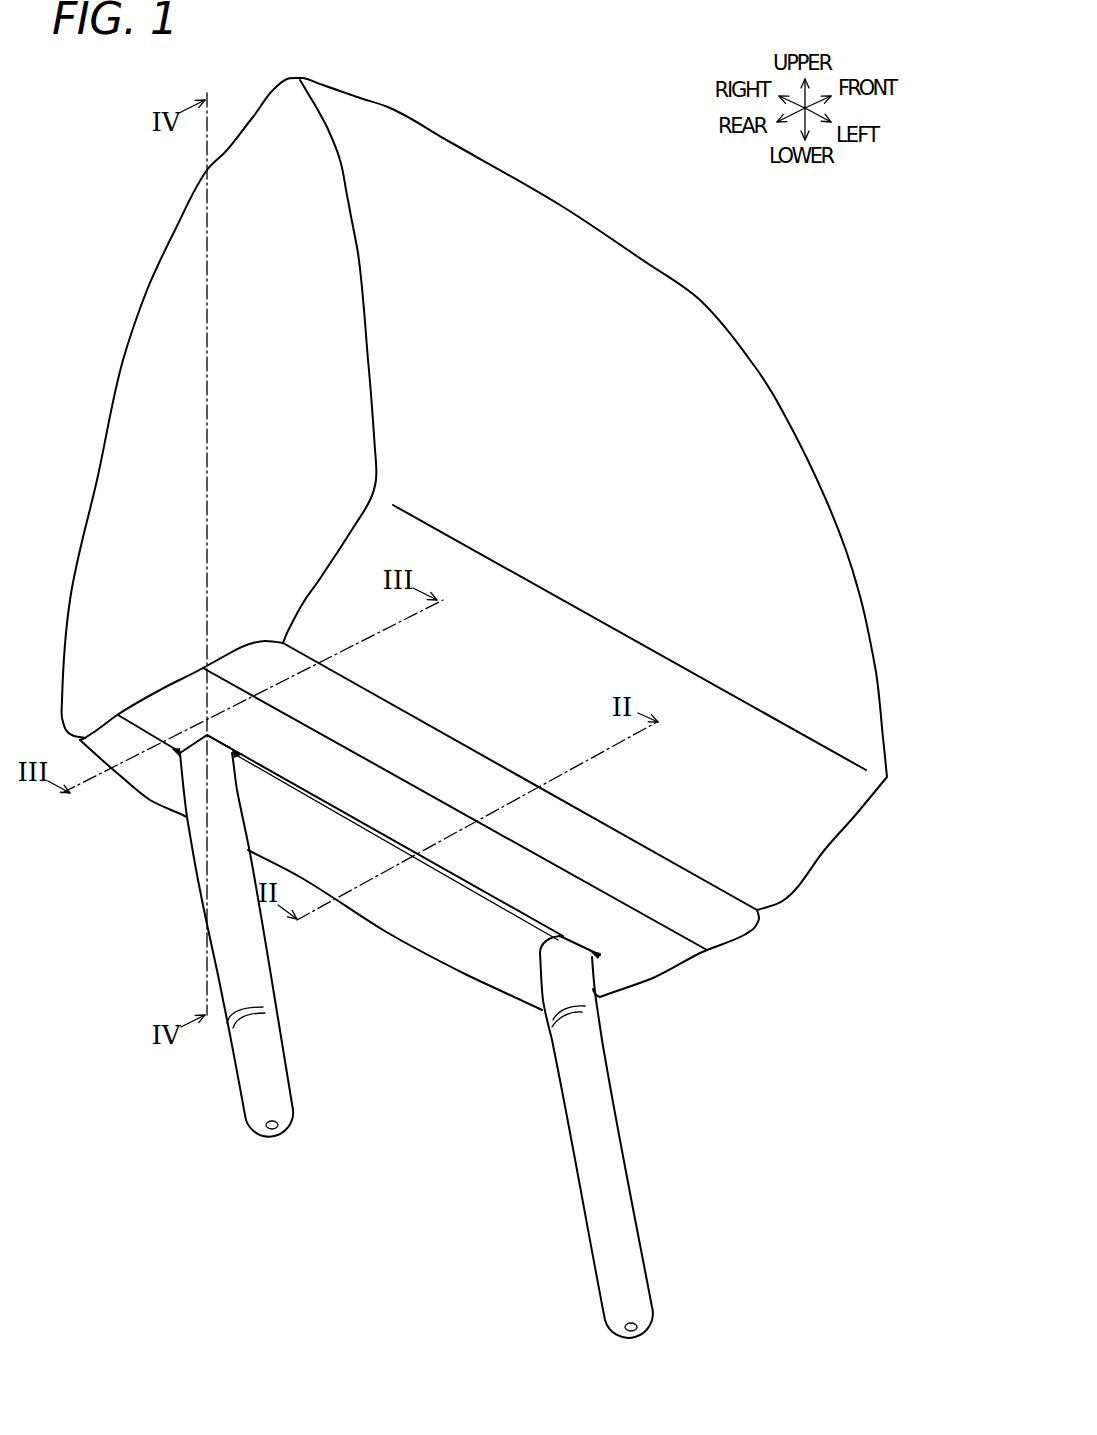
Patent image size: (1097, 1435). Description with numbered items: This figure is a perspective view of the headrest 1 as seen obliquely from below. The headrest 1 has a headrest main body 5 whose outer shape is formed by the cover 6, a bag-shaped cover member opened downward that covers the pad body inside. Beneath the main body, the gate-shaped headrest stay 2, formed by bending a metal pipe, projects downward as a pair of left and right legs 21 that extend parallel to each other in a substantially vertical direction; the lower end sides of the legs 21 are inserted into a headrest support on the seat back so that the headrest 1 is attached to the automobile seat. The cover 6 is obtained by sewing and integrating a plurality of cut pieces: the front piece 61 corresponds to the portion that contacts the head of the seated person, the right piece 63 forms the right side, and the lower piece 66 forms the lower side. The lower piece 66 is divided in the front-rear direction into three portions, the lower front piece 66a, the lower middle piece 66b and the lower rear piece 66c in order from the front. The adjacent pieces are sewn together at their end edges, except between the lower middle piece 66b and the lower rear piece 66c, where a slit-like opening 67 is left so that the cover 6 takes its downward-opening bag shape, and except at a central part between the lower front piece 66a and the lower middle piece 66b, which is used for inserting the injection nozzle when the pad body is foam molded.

The headrest 1 is at (548, 90).
The headrest stay 2 is at (412, 1036).
The headrest main body 5 is at (406, 116).
The cover 6 is at (697, 328).
The legs 21 is at (257, 970).
The front piece 61 is at (550, 248).
The right piece 63 is at (155, 343).
The lower piece 66 is at (813, 1028).
The lower front piece 66a is at (715, 923).
The lower middle piece 66b is at (643, 960).
The lower rear piece 66c is at (505, 973).
The slit-like opening 67 is at (284, 778).